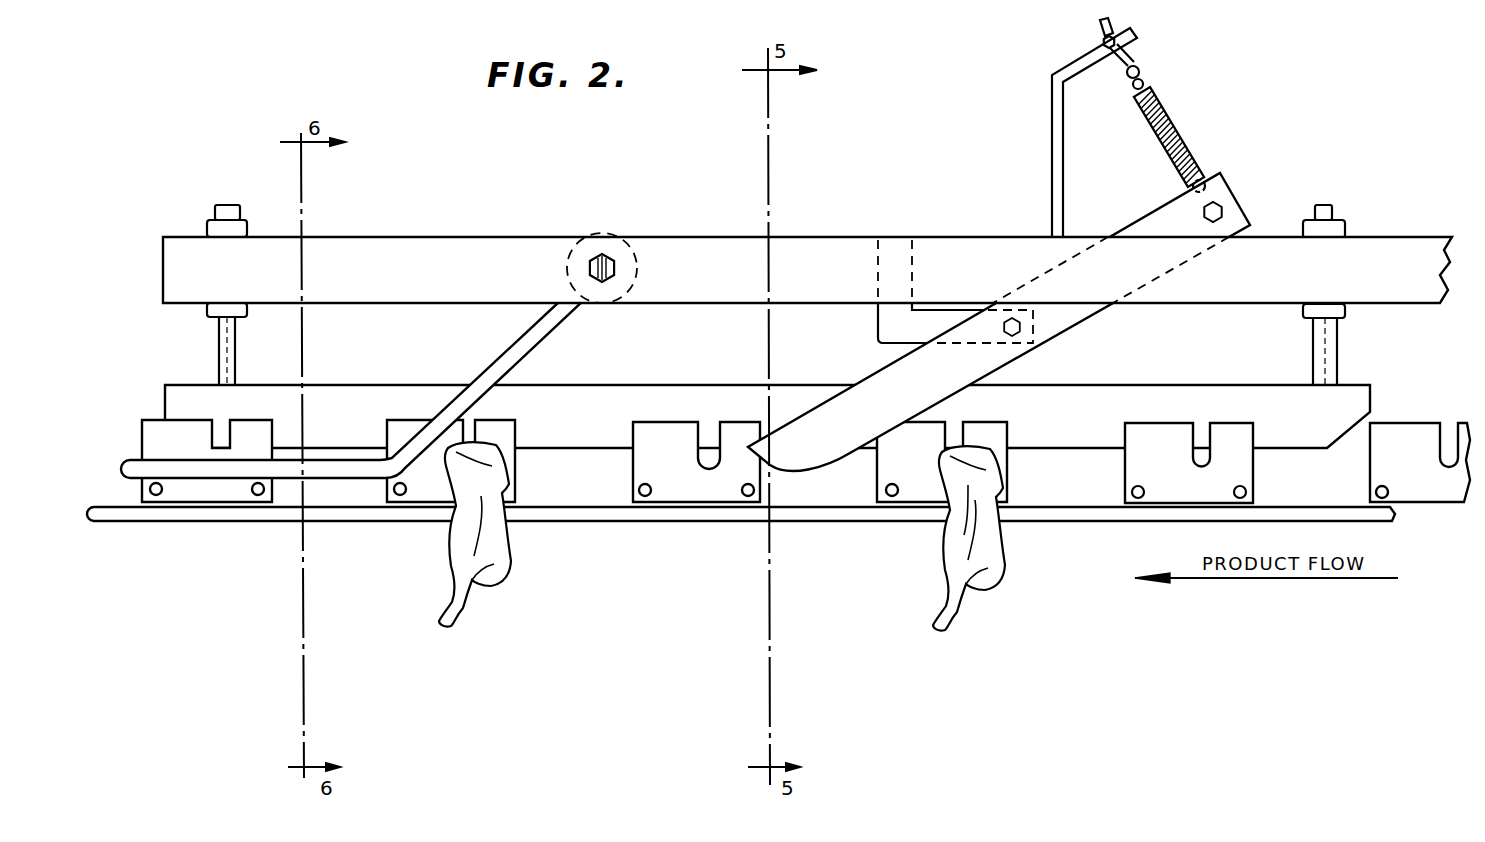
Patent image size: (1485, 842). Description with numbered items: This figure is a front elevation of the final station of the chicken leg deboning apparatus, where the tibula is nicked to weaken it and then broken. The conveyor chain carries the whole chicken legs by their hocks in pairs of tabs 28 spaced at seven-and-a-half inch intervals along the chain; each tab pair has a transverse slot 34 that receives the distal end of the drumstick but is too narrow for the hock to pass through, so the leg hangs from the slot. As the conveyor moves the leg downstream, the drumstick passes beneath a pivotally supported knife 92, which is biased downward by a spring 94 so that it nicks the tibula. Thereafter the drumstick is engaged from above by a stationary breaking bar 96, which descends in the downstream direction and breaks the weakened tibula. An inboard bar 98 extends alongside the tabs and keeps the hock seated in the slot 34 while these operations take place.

The tab 28 is at (1161, 487).
The transverse slot 34 is at (1197, 430).
The knife 92 is at (1060, 318).
The spring 94 is at (1183, 133).
The breaking bar 96 is at (500, 362).
The inboard bar 98 is at (615, 383).